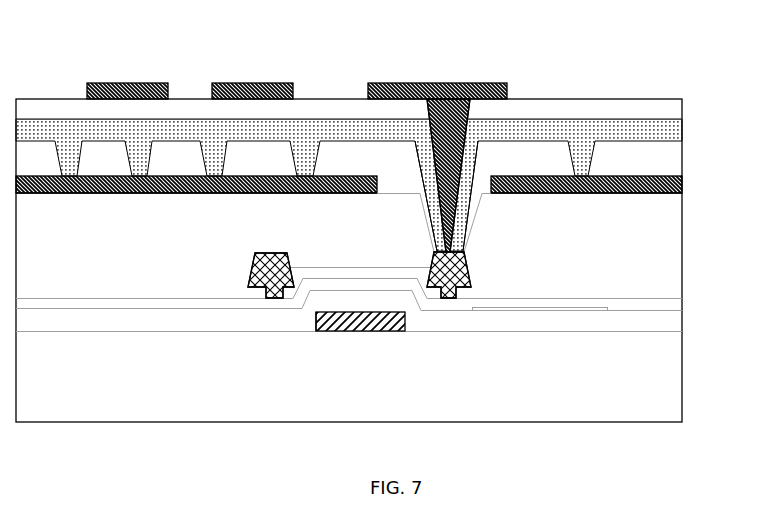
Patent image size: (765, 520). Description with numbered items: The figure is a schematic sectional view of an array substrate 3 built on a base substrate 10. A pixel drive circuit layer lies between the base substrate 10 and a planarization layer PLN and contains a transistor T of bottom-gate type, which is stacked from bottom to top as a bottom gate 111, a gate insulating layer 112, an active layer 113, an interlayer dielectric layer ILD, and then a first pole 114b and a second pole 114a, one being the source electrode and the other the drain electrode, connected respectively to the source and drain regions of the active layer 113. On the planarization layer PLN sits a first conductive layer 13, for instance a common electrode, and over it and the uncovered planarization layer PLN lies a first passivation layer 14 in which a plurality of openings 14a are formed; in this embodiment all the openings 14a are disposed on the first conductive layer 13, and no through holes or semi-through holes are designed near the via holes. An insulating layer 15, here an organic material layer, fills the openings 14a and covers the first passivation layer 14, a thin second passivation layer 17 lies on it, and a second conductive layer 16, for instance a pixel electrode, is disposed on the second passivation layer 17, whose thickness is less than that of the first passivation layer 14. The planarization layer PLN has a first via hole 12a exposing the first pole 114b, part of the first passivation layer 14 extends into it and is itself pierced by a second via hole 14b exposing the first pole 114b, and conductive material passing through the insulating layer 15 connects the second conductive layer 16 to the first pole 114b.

The array substrate 3 is at (637, 79).
The base substrate 10 is at (672, 372).
The first via hole 12a is at (470, 240).
The first conductive layer 13 is at (173, 194).
The first passivation layer 14 is at (662, 165).
The openings 14a is at (115, 194).
The second via hole 14b is at (470, 223).
The insulating layer 15 is at (672, 128).
The second conductive layer 16 is at (133, 83).
The second passivation layer 17 is at (662, 110).
The bottom gate 111 is at (358, 331).
The gate insulating layer 112 is at (528, 317).
The active layer 113 is at (347, 288).
The second pole 114a is at (278, 252).
The first pole 114b is at (453, 291).
The transistor T is at (311, 322).
The planarization layer PLN is at (672, 233).
The interlayer dielectric layer ILD is at (663, 303).